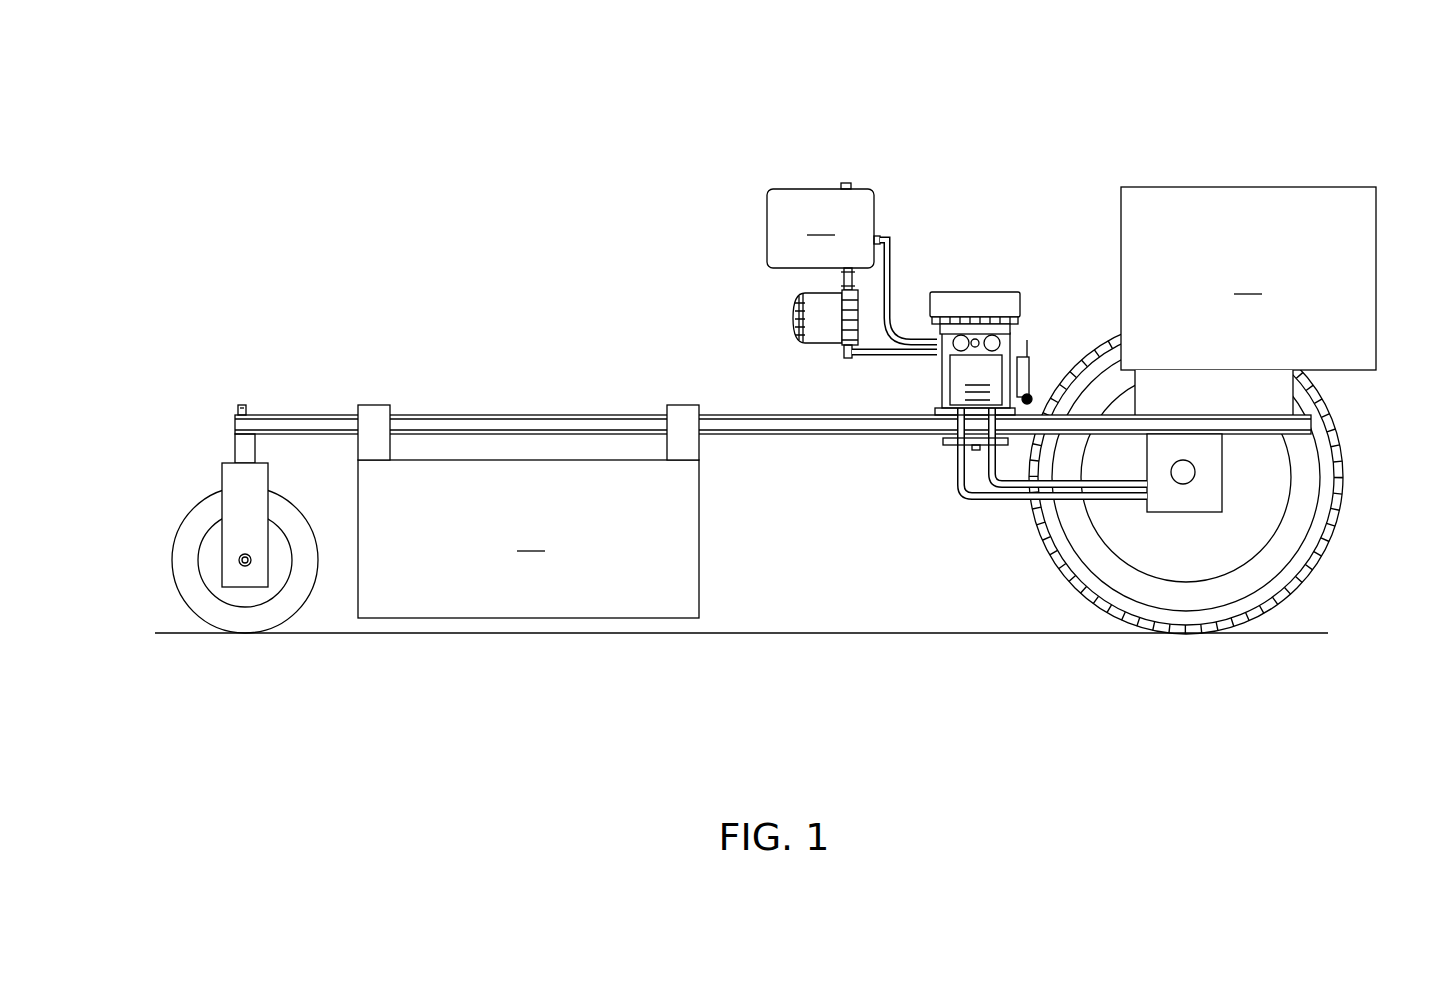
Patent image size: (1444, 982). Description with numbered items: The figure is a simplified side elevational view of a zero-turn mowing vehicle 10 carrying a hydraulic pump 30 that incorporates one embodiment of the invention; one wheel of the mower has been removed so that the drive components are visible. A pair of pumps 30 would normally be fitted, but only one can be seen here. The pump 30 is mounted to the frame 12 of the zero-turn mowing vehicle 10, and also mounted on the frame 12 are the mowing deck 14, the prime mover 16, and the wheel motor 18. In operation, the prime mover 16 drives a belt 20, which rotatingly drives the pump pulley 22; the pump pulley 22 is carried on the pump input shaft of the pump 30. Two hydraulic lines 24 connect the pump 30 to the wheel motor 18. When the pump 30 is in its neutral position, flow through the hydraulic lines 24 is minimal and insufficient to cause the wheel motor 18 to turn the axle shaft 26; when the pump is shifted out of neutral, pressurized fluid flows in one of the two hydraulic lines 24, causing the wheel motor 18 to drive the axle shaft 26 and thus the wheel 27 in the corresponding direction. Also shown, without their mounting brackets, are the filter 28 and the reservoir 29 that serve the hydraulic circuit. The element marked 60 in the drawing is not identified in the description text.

The zero-turn mowing vehicle 10 is at (390, 124).
The frame 12 is at (733, 413).
The mowing deck 14 is at (528, 511).
The prime mover 16 is at (1248, 278).
The wheel motor 18 is at (1183, 512).
The belt 20 is at (1063, 447).
The pump pulley 22 is at (943, 446).
The hydraulic lines 24 is at (963, 490).
The axle shaft 26 is at (1195, 475).
The wheel 27 is at (1305, 582).
The filter 28 is at (793, 330).
The reservoir 29 is at (823, 225).
The pump 30 is at (948, 388).
The valve 60 is at (997, 292).